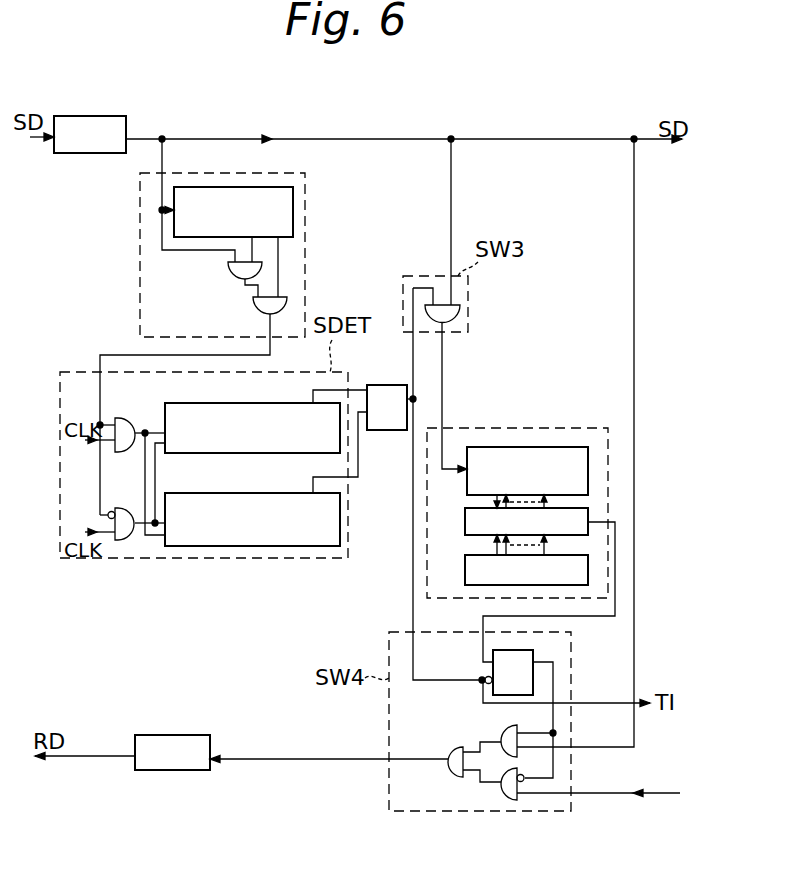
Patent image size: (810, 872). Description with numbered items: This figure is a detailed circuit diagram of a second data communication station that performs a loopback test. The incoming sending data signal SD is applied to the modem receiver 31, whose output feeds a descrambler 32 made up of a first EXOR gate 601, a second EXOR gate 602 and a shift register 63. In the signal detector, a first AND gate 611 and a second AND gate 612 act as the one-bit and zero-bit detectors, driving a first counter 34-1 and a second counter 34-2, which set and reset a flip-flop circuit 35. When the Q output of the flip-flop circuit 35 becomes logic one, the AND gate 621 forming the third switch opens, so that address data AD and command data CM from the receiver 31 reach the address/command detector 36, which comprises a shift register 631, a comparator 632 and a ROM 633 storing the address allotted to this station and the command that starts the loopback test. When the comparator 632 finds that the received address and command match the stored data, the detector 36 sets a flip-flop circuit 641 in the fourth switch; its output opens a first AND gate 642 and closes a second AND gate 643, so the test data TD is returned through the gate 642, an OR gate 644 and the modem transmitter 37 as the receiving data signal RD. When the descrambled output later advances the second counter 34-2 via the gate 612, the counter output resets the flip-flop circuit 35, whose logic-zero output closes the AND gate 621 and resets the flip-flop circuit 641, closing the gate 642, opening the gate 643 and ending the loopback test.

The modem receiver 31 is at (97, 116).
The descrambler 32 is at (307, 190).
The shift register 63 is at (225, 187).
The first EXOR gate 601 is at (228, 272).
The second EXOR gate 602 is at (253, 308).
The first AND gate 611 is at (128, 418).
The second AND gate 612 is at (124, 508).
The counter 34-1 is at (216, 403).
The second counter 34-2 is at (216, 493).
The flip-flop circuit 35 is at (387, 385).
The AND gate 621 is at (462, 312).
The address/command detector 36 is at (523, 428).
The shift register 631 is at (466, 474).
The comparator 632 is at (466, 516).
The ROM 633 is at (466, 564).
The flip-flop circuit 641 is at (537, 650).
The first AND gate 642 is at (500, 728).
The second AND gate 643 is at (500, 795).
The OR gate 644 is at (447, 752).
The modem transmitter 37 is at (172, 735).